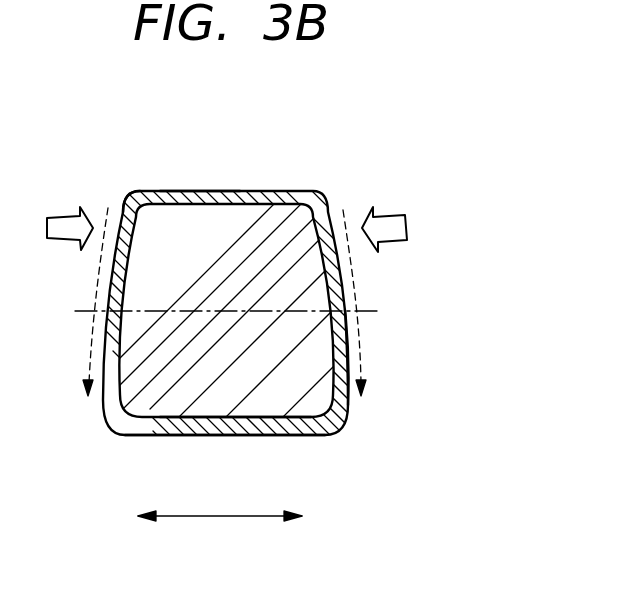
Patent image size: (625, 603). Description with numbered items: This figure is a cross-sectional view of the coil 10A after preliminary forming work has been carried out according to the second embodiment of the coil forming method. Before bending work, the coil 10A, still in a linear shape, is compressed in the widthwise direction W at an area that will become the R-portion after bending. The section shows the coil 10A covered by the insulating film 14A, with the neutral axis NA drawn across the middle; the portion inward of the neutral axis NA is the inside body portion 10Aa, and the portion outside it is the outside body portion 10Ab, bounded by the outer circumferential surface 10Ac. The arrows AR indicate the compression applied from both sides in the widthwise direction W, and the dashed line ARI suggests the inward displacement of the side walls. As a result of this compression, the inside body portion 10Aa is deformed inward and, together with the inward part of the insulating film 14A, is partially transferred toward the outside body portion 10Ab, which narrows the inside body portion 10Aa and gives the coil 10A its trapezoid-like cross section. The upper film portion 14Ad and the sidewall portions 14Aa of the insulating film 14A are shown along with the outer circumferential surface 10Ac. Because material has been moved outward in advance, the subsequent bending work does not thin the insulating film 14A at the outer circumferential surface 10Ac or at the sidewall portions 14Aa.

The coil 10A is at (272, 191).
The inside body portion 10Aa is at (128, 191).
The outside body portion 10Ab is at (305, 400).
The outer circumferential surface 10Ac is at (155, 435).
The insulating film 14A is at (337, 267).
The sidewall portion 14Aa is at (338, 349).
The upper wall portion 14Ad is at (182, 198).
The pressing direction arrows AR is at (393, 210).
The inward displacement direction line ARI is at (362, 344).
The neutral axis NA is at (374, 309).
The widthwise direction W is at (267, 517).